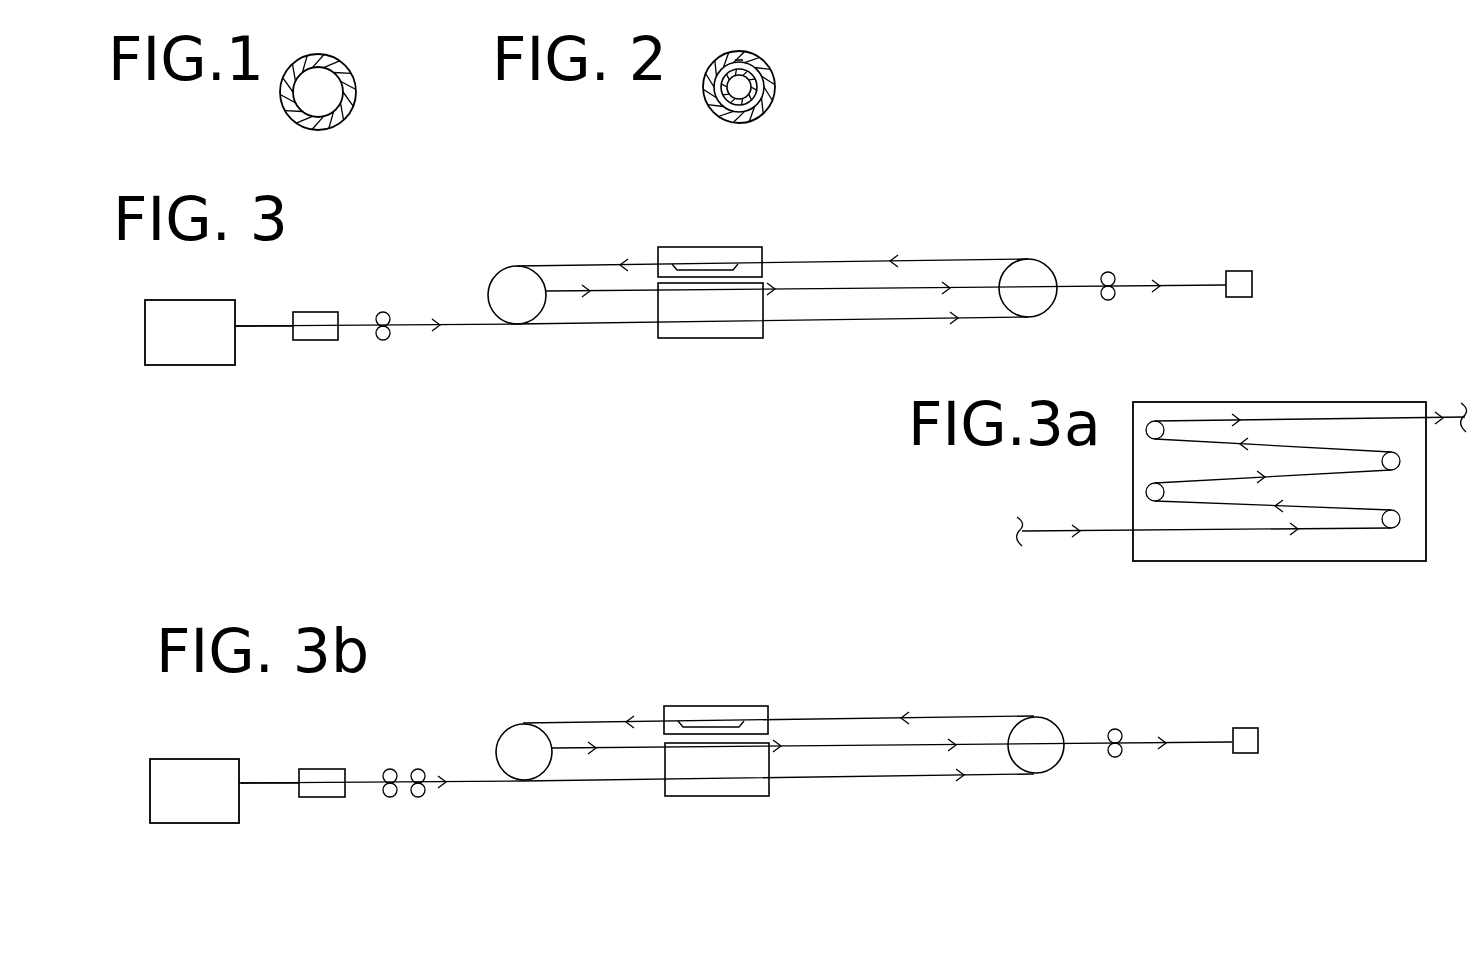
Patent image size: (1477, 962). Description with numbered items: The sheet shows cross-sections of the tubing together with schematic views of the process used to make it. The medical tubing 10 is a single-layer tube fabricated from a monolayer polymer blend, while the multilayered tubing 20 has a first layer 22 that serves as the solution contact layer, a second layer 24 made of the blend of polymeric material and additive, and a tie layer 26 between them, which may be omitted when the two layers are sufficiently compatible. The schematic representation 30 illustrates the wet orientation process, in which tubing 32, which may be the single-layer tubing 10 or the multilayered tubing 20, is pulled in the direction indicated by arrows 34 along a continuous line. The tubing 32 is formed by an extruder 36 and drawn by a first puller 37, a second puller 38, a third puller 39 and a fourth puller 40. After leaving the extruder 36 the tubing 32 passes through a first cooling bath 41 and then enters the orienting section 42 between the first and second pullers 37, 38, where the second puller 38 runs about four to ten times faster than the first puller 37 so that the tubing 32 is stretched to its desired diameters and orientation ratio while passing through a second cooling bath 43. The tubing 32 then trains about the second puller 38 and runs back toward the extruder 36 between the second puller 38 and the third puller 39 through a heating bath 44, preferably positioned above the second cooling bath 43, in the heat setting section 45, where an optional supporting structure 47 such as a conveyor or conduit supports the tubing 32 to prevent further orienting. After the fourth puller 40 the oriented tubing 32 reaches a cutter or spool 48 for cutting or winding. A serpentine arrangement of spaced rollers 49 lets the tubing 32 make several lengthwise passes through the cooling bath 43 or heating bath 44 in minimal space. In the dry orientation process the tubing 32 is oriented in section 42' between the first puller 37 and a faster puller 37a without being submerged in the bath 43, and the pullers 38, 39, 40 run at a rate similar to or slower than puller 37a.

In FIG. 1, the medical tubing 10 is at (360, 72).
In FIG. 2, the multilayered tubing 20 is at (806, 98).
In FIG. 2, the first layer 22 is at (756, 98).
In FIG. 2, the second layer 24 is at (714, 108).
In FIG. 2, the tie layer 26 is at (745, 64).
In FIG. 3B, the schematic representation 30 is at (652, 672).
In FIG. 3, the tubing 32 is at (255, 330).
In FIG. 3B, the tubing 32 is at (269, 811).
In FIG. 3, the arrows 34 is at (440, 333).
In FIG. 3B, the arrows 34 is at (736, 752).
In FIG. 3, the extruder 36 is at (192, 315).
In FIG. 3B, the extruder 36 is at (194, 769).
In FIG. 3, the first puller 37 is at (383, 312).
In FIG. 3B, the first puller 37 is at (391, 759).
In FIG. 3B, the puller 37a is at (441, 759).
In FIG. 3, the second puller 38 is at (1030, 268).
In FIG. 3B, the second puller 38 is at (1037, 719).
In FIG. 3, the third puller 39 is at (515, 280).
In FIG. 3B, the third puller 39 is at (524, 727).
In FIG. 3, the fourth puller 40 is at (1110, 273).
In FIG. 3B, the fourth puller 40 is at (1128, 724).
In FIG. 3, the first cooling bath 41 is at (311, 320).
In FIG. 3B, the first cooling bath 41 is at (322, 762).
In FIG. 3, the orienting section 42 is at (620, 360).
In FIG. 3B, the dry orientation section 42' is at (401, 811).
In FIG. 3, the second cooling bath 43 is at (752, 330).
In FIG. 3A, the second cooling bath 43 is at (1308, 407).
In FIG. 3B, the second cooling bath 43 is at (732, 796).
In FIG. 3, the heating bath 44 is at (735, 252).
In FIG. 3B, the heating bath 44 is at (718, 700).
In FIG. 3, the heat setting section 45 is at (789, 256).
In FIG. 3B, the heat setting section 45 is at (804, 692).
In FIG. 3, the supporting structure 47 is at (694, 266).
In FIG. 3B, the supporting structure 47 is at (711, 686).
In FIG. 3, the cutter or spool 48 is at (1234, 272).
In FIG. 3B, the cutter or spool 48 is at (1250, 721).
In FIG. 3A, the spaced rollers 49 is at (1150, 490).